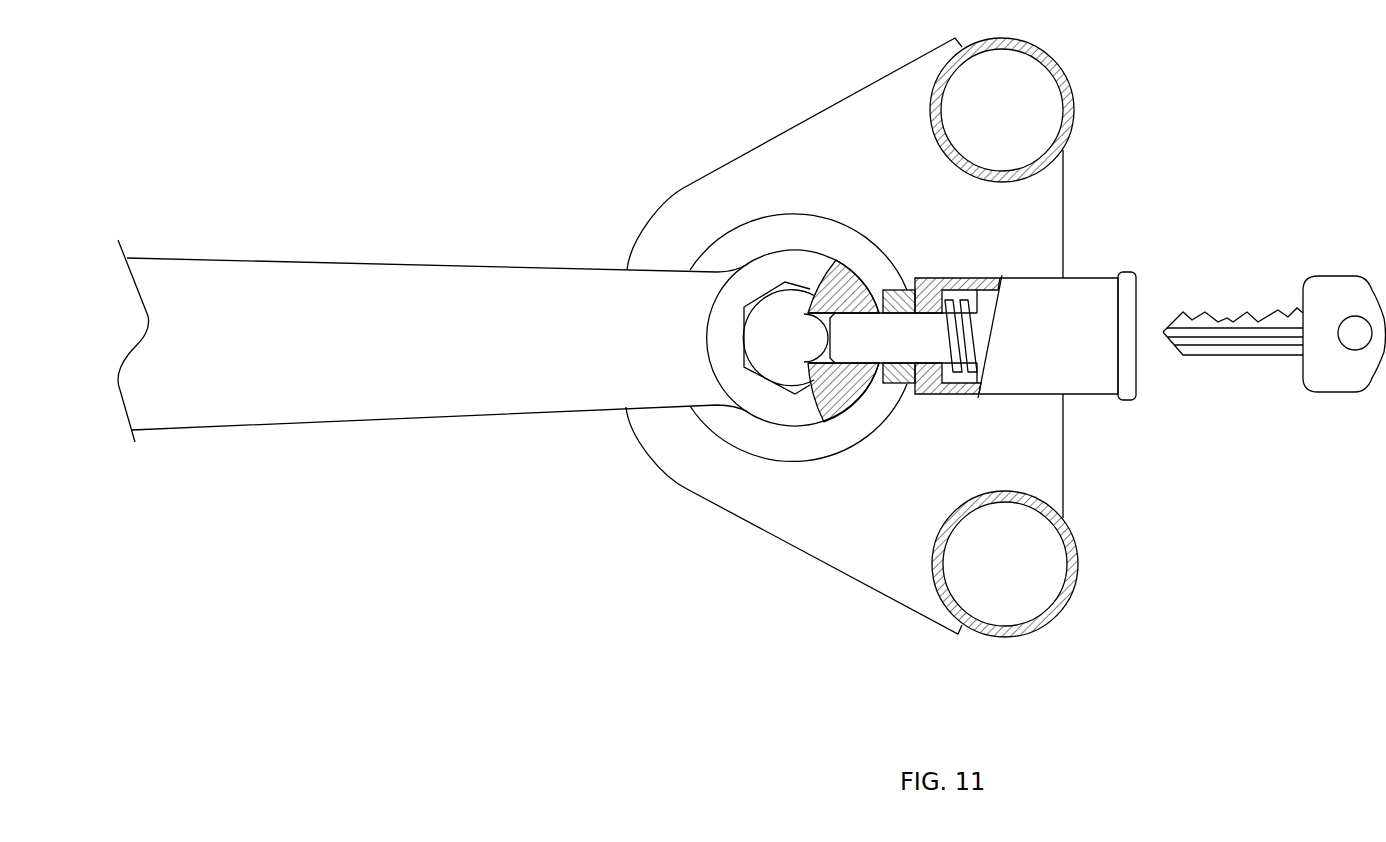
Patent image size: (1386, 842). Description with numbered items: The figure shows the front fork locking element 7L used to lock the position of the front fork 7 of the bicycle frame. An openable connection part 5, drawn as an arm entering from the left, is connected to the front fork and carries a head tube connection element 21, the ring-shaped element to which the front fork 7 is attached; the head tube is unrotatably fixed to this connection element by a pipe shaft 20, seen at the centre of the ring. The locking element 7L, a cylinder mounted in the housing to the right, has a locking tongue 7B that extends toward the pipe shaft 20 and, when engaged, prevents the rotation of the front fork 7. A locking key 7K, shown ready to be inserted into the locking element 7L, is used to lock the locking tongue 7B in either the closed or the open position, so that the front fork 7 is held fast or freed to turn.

The openable connection part 5 is at (530, 398).
The pipe shaft 20 is at (781, 313).
The head tube connection element 21 is at (745, 238).
The front fork 7 is at (1132, 147).
The locking tongue 7B is at (895, 327).
The front fork locking element 7L is at (1108, 307).
The locking key 7K is at (1238, 317).